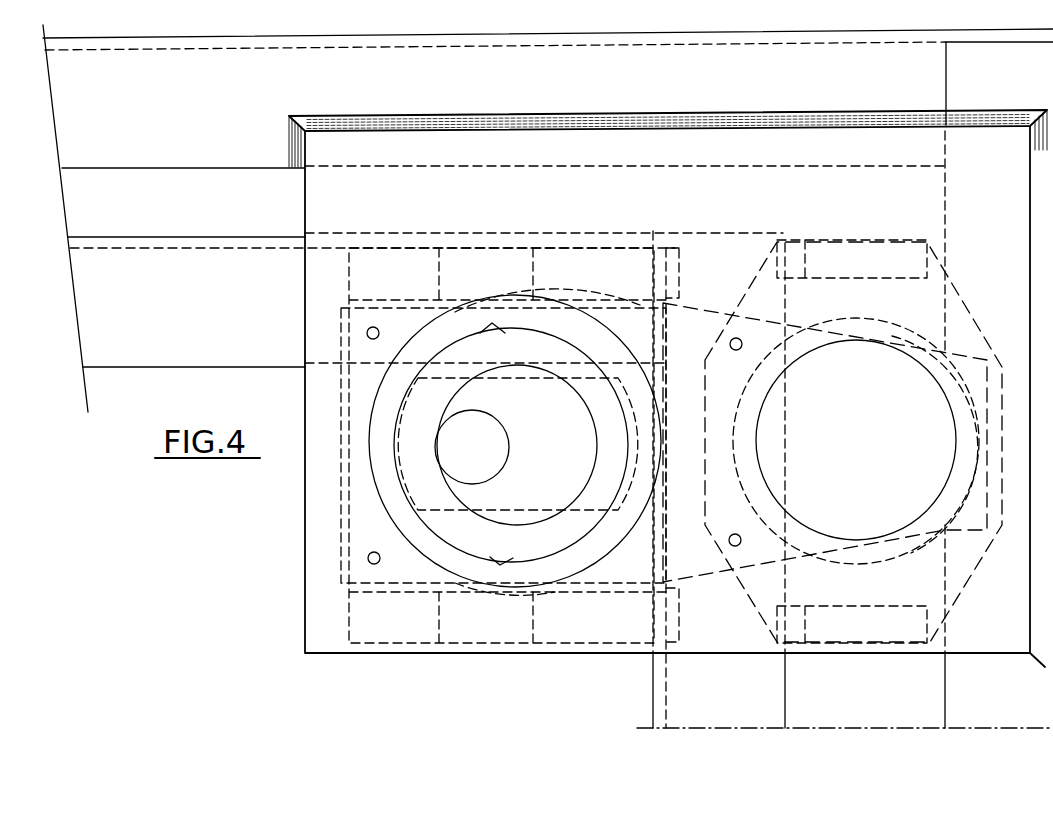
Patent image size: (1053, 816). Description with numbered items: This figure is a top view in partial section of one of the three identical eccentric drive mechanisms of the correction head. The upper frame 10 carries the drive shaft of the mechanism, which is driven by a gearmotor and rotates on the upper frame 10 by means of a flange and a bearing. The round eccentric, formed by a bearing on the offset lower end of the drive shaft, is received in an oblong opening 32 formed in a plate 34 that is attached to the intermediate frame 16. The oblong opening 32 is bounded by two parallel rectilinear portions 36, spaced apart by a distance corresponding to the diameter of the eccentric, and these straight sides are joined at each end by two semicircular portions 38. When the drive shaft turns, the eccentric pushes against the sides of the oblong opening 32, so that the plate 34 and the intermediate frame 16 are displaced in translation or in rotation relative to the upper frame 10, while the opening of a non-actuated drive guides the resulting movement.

The upper frame 10 is at (203, 151).
The intermediate frame 16 is at (203, 244).
The oblong opening 32 is at (430, 478).
The plate 34 is at (342, 312).
The parallel rectilinear portions 36 is at (580, 503).
The semicircular portions 38 is at (394, 447).